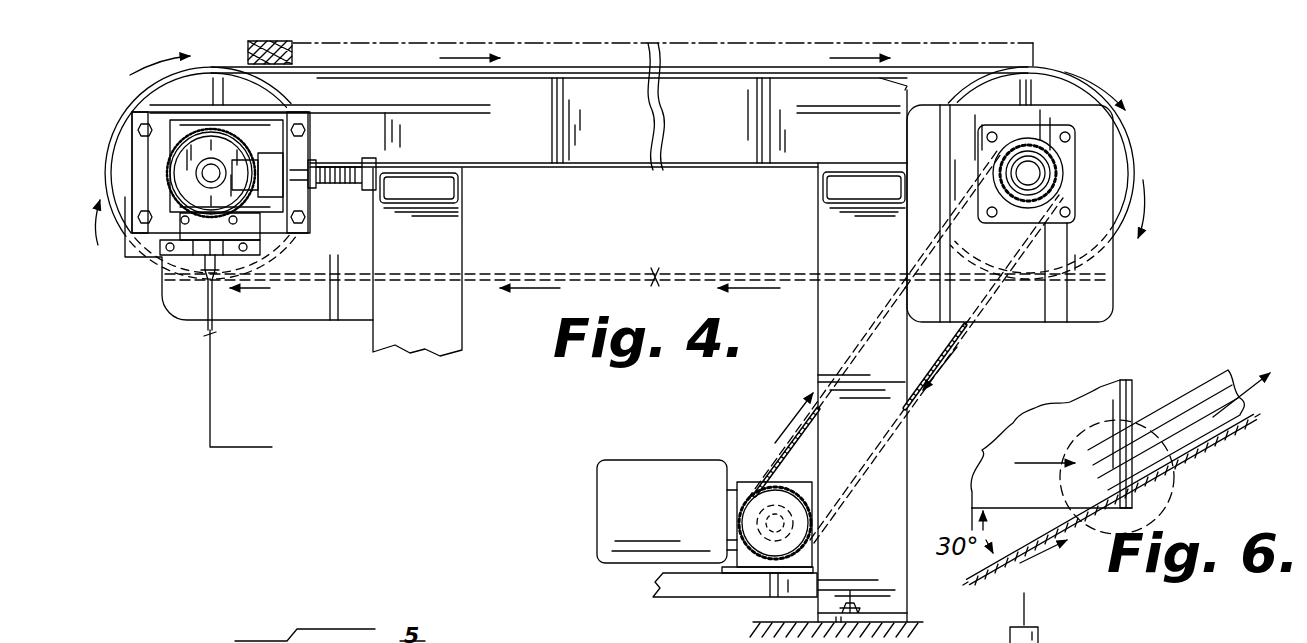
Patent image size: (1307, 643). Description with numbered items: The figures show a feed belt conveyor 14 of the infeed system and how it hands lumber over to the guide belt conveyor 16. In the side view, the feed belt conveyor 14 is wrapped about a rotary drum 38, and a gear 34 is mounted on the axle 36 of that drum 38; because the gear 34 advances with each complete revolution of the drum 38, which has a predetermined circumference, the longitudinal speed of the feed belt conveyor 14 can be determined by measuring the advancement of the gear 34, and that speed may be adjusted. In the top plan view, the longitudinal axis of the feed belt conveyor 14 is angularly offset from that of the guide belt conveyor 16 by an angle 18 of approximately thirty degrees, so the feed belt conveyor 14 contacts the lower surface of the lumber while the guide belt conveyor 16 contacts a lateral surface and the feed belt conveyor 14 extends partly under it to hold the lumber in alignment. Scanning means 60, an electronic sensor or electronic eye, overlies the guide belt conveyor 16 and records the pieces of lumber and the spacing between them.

In FIG. 4, the feed belt conveyor 14 is at (795, 68).
In FIG. 6, the feed belt conveyor 14 is at (1078, 408).
In FIG. 6, the guide belt conveyor 16 is at (1032, 542).
In FIG. 6, the angle 18 is at (982, 530).
In FIG. 4, the gear 34 is at (195, 218).
In FIG. 4, the axle 36 is at (194, 173).
In FIG. 4, the rotary drum 38 is at (277, 103).
In FIG. 6, the scanning means 60 is at (1210, 489).